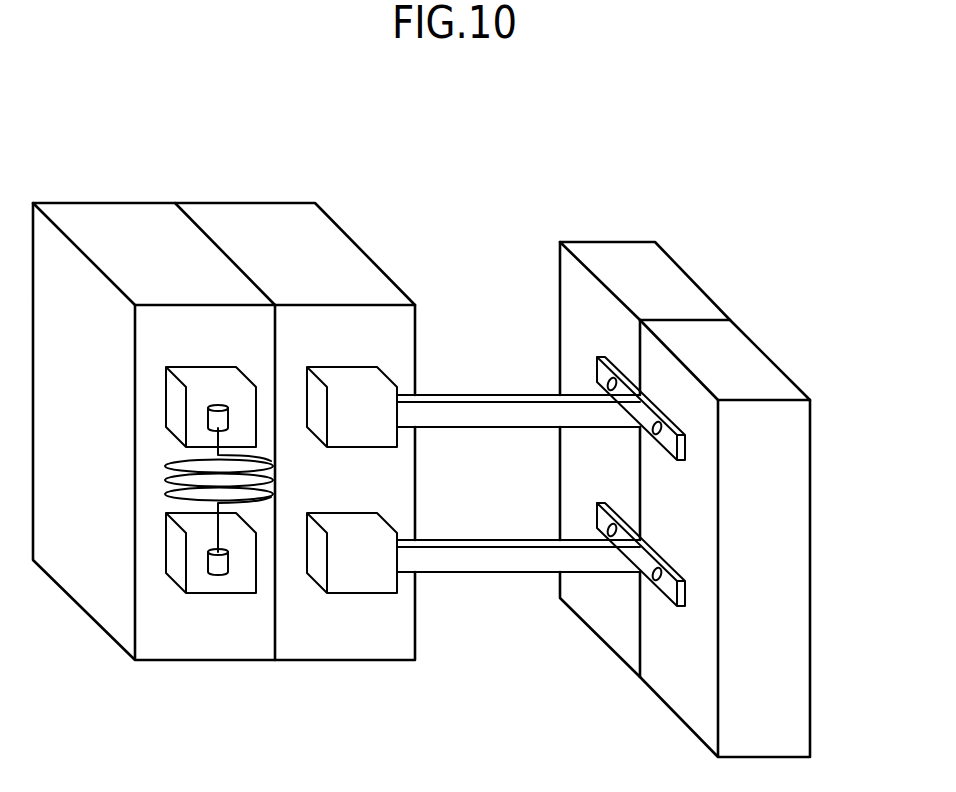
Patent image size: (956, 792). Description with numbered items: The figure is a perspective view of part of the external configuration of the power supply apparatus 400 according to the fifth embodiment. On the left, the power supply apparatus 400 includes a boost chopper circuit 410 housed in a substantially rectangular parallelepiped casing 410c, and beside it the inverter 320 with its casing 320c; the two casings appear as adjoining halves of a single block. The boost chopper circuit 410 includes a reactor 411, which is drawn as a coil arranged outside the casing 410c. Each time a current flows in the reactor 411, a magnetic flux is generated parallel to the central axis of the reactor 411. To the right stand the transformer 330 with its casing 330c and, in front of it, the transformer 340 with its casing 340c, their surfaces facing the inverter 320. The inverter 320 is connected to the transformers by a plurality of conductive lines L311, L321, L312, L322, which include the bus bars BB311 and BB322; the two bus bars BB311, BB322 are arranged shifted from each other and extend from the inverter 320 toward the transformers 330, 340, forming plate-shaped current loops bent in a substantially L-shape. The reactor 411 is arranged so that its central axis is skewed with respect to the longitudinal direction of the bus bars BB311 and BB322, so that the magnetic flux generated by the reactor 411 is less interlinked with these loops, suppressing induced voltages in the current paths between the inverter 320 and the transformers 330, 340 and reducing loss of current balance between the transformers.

The power supply apparatus 400 is at (813, 117).
The boost chopper circuit 410 is at (154, 368).
The casing 410c is at (130, 216).
The reactor 411 is at (163, 478).
The inverter 320 is at (295, 368).
The casing 320c is at (280, 216).
The transformer 330 is at (645, 396).
The casing 330c is at (620, 255).
The transformer 340 is at (750, 503).
The casing 340c is at (770, 382).
The conductive line L311 is at (491, 306).
The conductive line L321 is at (518, 340).
The conductive line L312 is at (508, 664).
The conductive line L322 is at (518, 628).
The bus bar BB311 is at (517, 395).
The bus bar BB322 is at (485, 572).